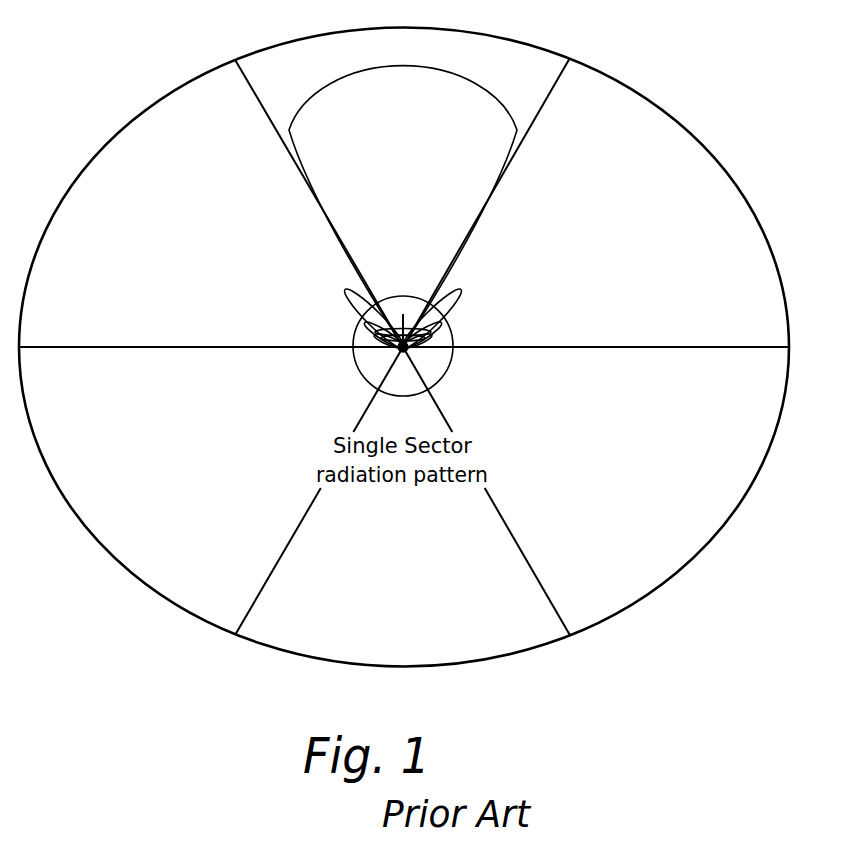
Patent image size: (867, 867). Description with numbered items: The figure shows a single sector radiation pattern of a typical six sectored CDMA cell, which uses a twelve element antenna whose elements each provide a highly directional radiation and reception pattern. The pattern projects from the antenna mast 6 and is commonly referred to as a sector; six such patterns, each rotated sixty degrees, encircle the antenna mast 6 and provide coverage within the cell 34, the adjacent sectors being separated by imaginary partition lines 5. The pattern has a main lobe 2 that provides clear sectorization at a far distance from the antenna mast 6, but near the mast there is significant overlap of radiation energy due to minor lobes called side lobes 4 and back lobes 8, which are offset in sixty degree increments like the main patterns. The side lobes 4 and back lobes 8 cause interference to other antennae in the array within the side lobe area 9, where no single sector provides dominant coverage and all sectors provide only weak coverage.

The main lobe 2 is at (295, 82).
The cell 34 is at (717, 219).
The side lobes 4 is at (367, 322).
The imaginary partition lines 5 is at (677, 349).
The antenna mast 6 is at (425, 340).
The back lobes 8 is at (385, 333).
The side lobe area 9 is at (452, 364).